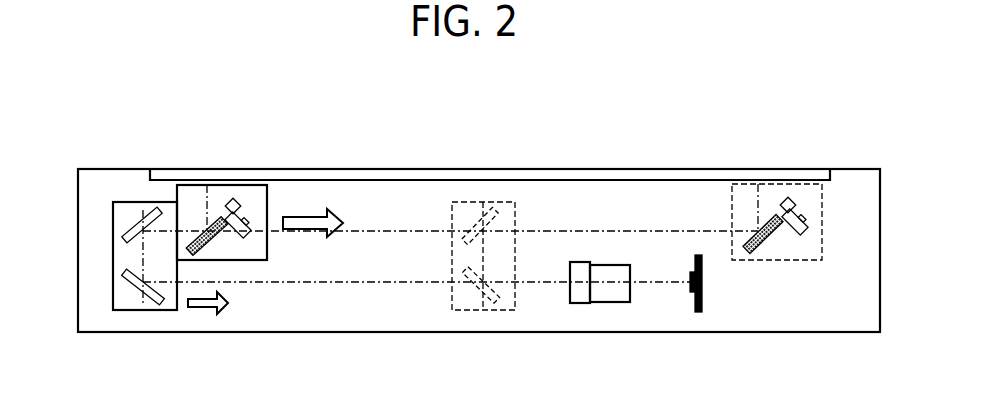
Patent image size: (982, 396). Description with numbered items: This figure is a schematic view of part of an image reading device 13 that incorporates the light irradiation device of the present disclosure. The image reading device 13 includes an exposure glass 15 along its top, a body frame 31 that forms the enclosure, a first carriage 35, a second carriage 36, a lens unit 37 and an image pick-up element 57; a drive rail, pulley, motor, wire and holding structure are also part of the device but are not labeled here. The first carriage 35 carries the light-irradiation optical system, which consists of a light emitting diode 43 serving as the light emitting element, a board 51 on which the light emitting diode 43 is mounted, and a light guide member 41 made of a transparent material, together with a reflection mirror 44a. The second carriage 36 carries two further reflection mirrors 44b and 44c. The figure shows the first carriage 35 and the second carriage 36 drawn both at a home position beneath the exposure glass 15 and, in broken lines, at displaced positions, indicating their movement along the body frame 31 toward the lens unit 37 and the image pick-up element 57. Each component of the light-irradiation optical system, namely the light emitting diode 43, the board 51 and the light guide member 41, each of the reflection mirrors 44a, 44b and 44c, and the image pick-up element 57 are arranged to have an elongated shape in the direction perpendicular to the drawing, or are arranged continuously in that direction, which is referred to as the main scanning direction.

The image reading device 13 is at (73, 210).
The exposure glass 15 is at (383, 168).
The body frame 31 is at (92, 333).
The first carriage 35 is at (267, 243).
The second carriage 36 is at (130, 238).
The lens unit 37 is at (630, 293).
The light guide member 41 is at (234, 201).
The light emitting diode (LED) 43 is at (246, 218).
The reflection mirror 44a is at (222, 242).
The reflection mirror 44b is at (125, 222).
The reflection mirror 44c is at (135, 297).
The board 51 is at (250, 222).
The image pick-up element 57 is at (702, 295).